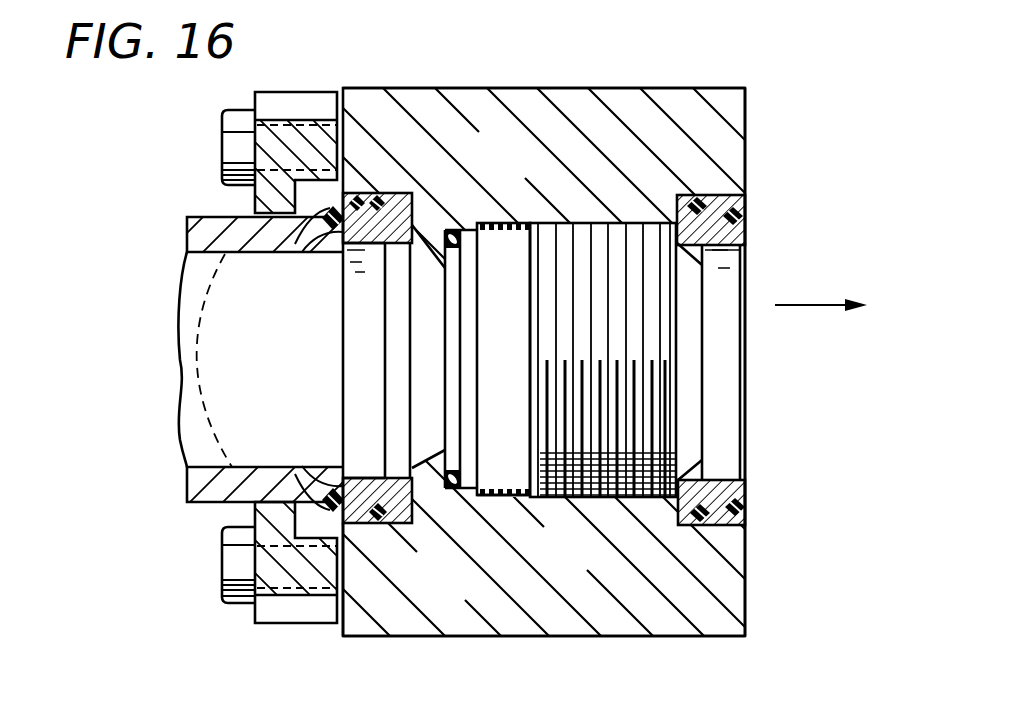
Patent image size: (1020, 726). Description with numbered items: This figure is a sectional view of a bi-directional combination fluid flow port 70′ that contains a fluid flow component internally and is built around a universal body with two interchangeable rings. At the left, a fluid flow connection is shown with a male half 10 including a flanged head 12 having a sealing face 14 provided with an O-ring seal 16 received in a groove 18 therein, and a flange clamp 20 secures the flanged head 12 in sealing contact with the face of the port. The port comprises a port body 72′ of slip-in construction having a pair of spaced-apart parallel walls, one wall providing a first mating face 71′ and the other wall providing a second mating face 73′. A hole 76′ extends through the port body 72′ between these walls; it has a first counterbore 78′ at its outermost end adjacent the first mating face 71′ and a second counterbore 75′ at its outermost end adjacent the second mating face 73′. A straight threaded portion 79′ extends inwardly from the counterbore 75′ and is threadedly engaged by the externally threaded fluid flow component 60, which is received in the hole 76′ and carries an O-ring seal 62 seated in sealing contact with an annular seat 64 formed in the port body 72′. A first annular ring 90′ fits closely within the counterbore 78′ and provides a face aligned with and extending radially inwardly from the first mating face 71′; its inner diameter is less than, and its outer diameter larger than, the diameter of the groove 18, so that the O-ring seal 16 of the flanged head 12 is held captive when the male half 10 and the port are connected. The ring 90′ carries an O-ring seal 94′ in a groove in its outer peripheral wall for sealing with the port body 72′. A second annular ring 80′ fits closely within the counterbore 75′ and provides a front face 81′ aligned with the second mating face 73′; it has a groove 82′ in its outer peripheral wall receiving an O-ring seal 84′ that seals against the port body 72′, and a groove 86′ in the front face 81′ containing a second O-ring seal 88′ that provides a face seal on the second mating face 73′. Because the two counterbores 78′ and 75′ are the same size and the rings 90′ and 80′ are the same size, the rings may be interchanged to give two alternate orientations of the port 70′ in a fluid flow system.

The male half 10 is at (192, 152).
The flanged head 12 is at (187, 238).
The sealing face 14 is at (345, 530).
The O-ring seal 16 is at (322, 244).
The groove 18 is at (326, 216).
The flange clamp 20 is at (273, 622).
The fluid flow component 60 is at (668, 345).
The O-ring seal 62 is at (457, 230).
The annular seat 64 is at (442, 292).
The port 70′ is at (554, 88).
The first mating face 71′ is at (318, 100).
The port body 72′ is at (452, 100).
The second mating face 73′ is at (745, 110).
The second counterbore 75′ is at (680, 514).
The hole 76′ is at (366, 393).
The first counterbore 78′ is at (412, 517).
The threaded portion 79′ is at (504, 498).
The second annular ring 80′ is at (745, 490).
The front face 81′ is at (750, 228).
The groove 82′ is at (695, 485).
The O-ring seal 84′ is at (702, 525).
The groove 86′ is at (745, 258).
The second O-ring seal 88′ is at (748, 208).
The first annular ring 90′ is at (345, 243).
The O-ring seal 94′ is at (373, 480).